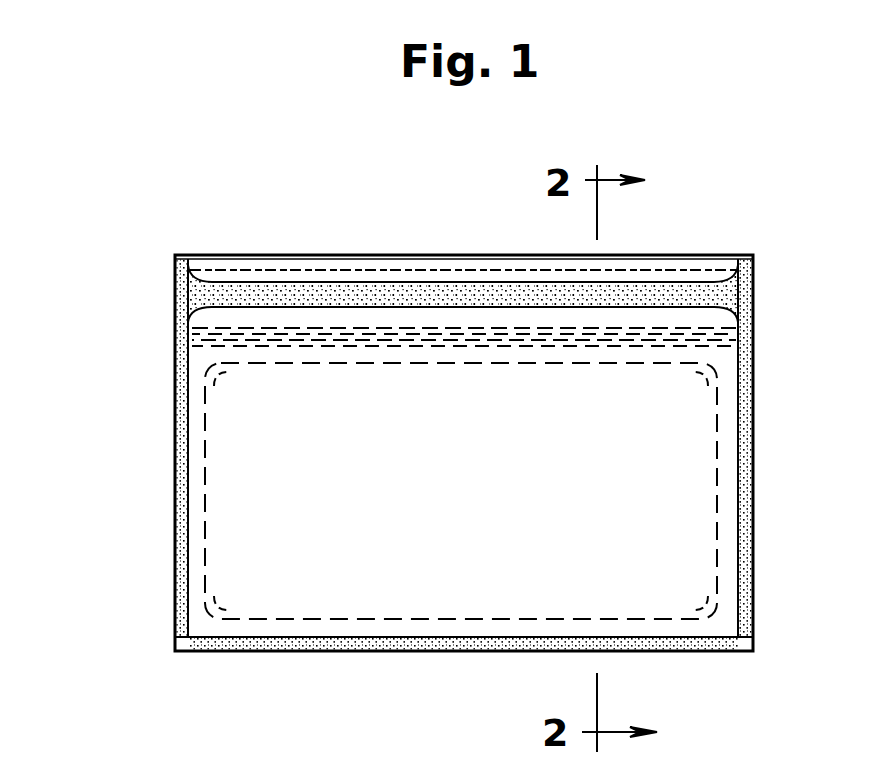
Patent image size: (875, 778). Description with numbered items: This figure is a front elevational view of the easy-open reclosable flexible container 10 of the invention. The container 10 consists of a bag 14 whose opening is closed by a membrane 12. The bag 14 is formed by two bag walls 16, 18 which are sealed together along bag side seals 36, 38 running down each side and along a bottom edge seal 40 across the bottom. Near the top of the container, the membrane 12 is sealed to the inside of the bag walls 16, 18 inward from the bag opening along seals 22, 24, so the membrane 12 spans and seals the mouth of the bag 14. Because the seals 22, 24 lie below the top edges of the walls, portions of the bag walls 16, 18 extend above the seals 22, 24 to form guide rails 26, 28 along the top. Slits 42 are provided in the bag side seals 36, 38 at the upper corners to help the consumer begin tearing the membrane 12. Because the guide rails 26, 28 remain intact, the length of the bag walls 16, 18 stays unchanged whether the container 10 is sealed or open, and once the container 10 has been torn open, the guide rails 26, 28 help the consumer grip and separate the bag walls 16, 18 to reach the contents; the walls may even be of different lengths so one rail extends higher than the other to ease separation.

The reclosable flexible container 10 is at (323, 217).
The membrane 12 is at (220, 274).
The bag 14 is at (165, 430).
The bag wall 16 is at (248, 618).
The bag wall 18 is at (363, 600).
The seal 22 is at (495, 290).
The seal 24 is at (405, 295).
The guide rail 26 is at (658, 273).
The guide rail 28 is at (702, 268).
The bag side seal 36 is at (187, 550).
The bag side seal 38 is at (740, 612).
The bottom edge seal 40 is at (485, 646).
The slits 42 is at (175, 277).